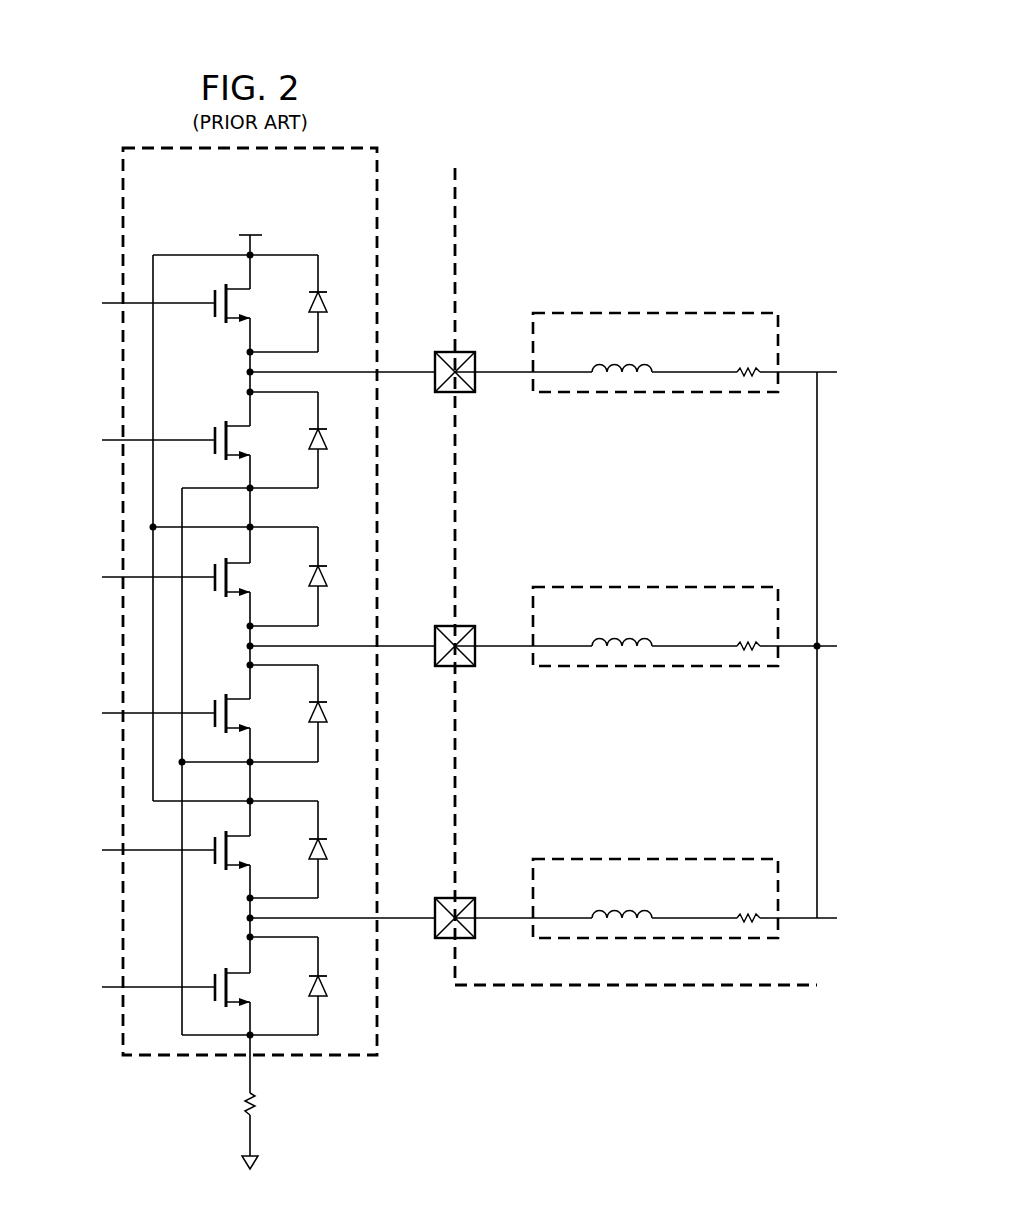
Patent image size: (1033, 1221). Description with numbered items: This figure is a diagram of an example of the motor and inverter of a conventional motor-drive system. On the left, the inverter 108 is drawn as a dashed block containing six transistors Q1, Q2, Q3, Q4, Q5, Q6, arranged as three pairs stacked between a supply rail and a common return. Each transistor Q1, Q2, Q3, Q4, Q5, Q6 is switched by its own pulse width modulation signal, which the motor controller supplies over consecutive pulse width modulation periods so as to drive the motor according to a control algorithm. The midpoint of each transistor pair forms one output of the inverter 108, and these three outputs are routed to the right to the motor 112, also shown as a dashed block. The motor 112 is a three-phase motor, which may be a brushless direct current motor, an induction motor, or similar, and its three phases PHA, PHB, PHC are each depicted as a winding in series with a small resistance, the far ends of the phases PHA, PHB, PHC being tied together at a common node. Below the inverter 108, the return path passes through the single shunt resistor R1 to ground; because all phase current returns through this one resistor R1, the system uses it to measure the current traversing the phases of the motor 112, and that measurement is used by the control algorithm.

The inverter 108 is at (118, 229).
The motor 112 is at (614, 194).
The transistor Q1 is at (245, 303).
The transistor Q2 is at (245, 440).
The transistor Q3 is at (245, 577).
The transistor Q4 is at (245, 713).
The transistor Q5 is at (245, 850).
The transistor Q6 is at (245, 987).
The resistor R1 is at (262, 1104).
The motor phase PHA is at (646, 352).
The motor phase PHB is at (646, 626).
The motor phase PHC is at (646, 898).